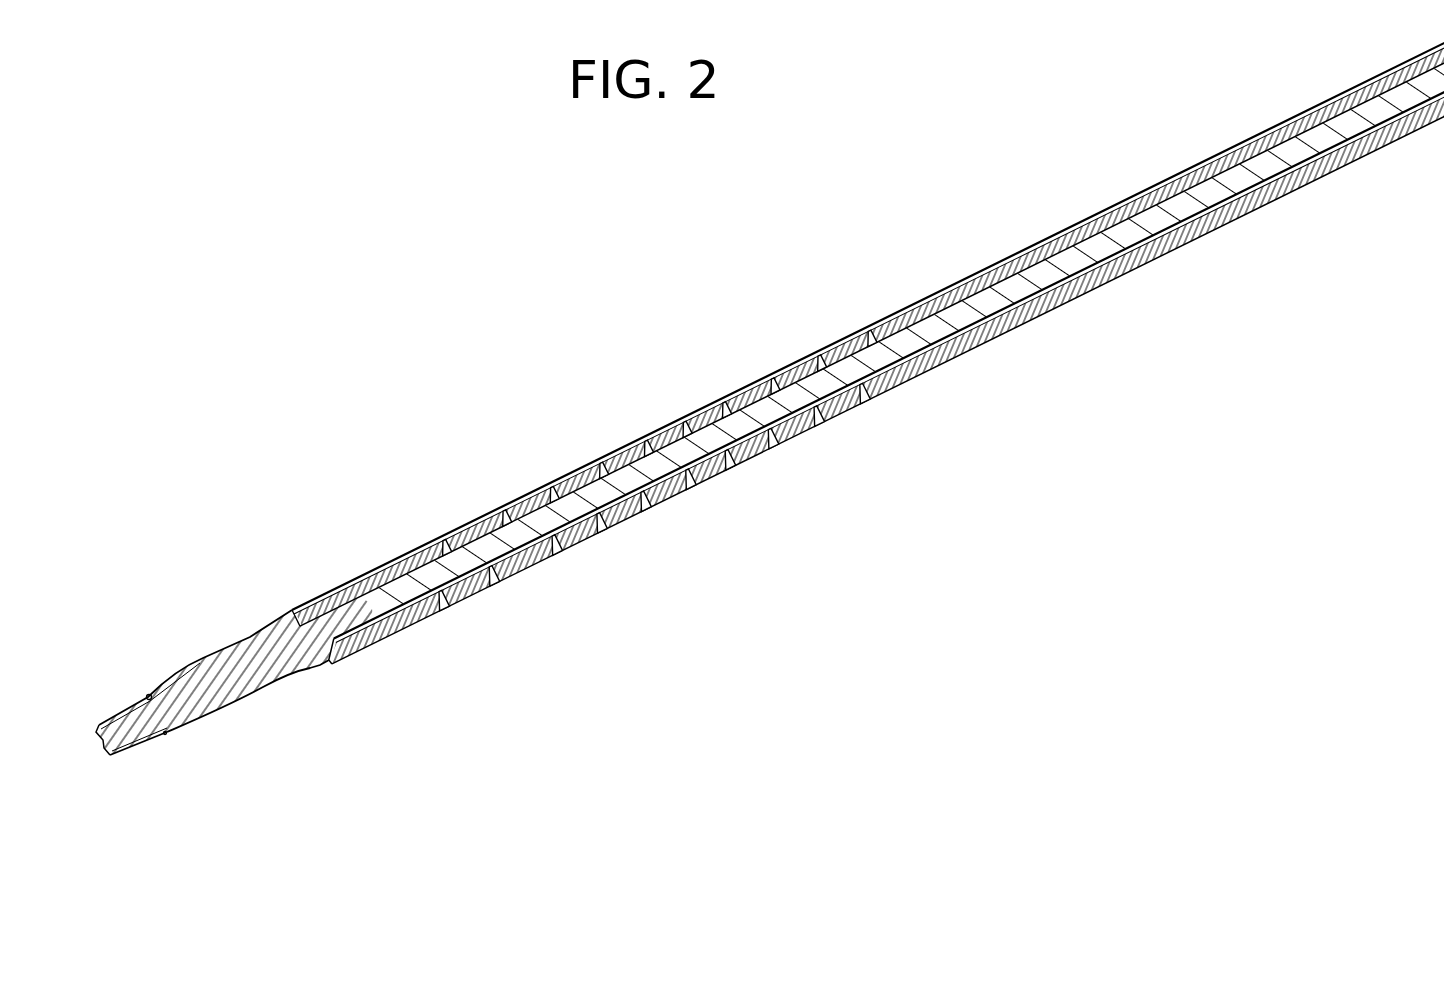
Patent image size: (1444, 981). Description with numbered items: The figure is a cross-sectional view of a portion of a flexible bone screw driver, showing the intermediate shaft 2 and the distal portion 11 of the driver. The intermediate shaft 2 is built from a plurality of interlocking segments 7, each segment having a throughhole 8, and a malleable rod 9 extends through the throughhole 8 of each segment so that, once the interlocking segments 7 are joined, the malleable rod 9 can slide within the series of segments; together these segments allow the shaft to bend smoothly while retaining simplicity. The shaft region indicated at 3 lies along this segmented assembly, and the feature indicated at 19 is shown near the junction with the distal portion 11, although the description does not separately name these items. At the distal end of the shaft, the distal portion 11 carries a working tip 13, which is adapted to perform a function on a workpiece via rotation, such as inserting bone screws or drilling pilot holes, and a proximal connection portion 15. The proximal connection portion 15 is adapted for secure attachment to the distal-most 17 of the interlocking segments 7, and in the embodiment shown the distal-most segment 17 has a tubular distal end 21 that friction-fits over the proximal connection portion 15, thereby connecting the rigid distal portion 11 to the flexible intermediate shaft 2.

The intermediate shaft 2 is at (610, 381).
The rail 3 is at (946, 290).
The interlocking segments 7 is at (527, 494).
The throughhole 8 is at (603, 527).
The malleable rod 9 is at (457, 590).
The distal portion 11 is at (294, 748).
The working tip 13 is at (118, 716).
The proximal connection portion 15 is at (341, 625).
The distal-most interlocking segment 17 is at (375, 570).
The socket 19 is at (844, 963).
The tubular distal end 21 is at (349, 651).